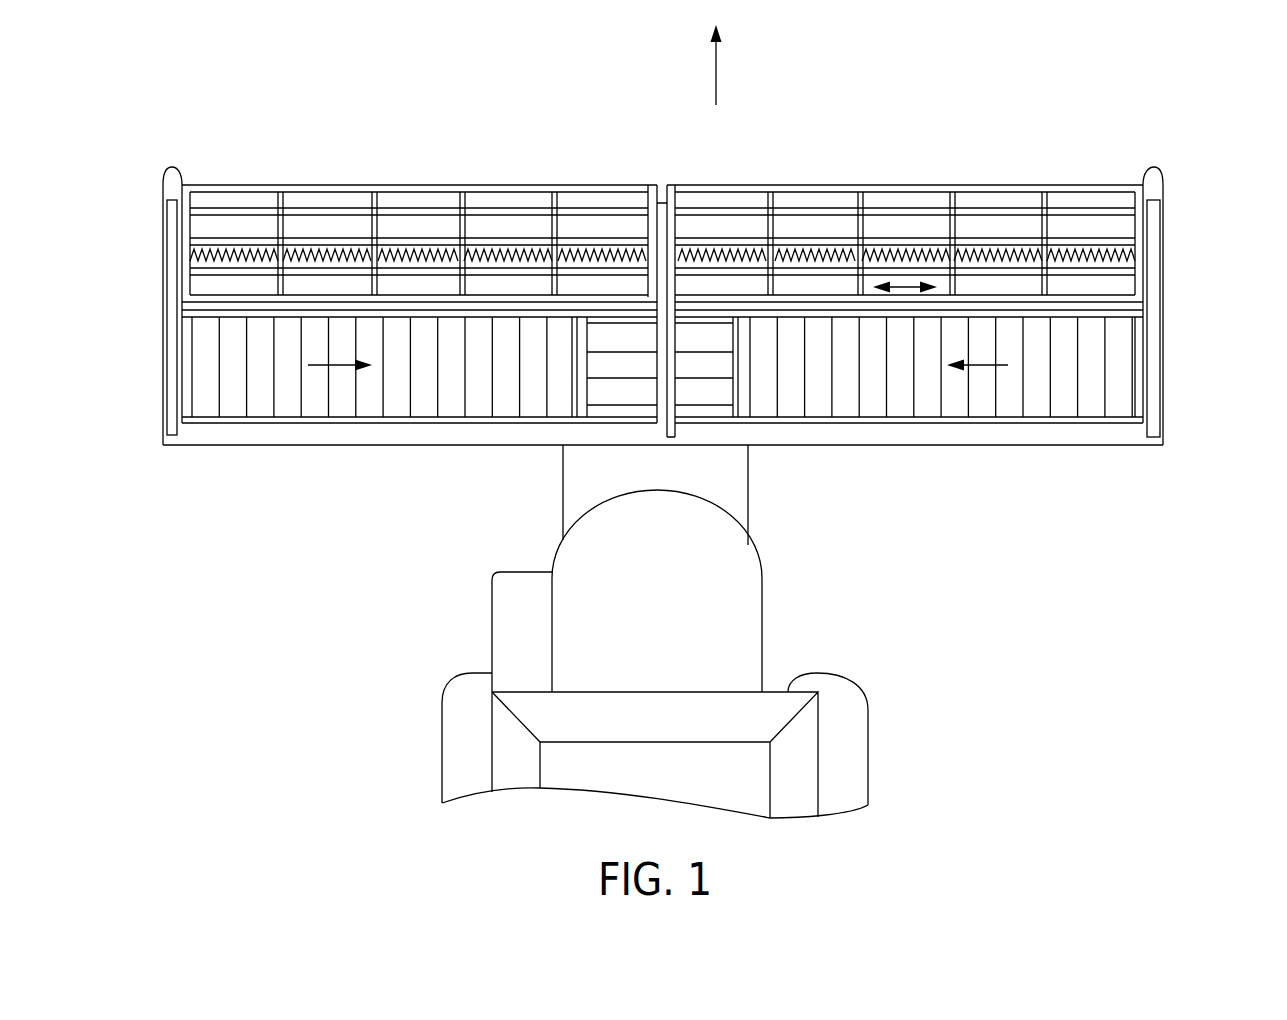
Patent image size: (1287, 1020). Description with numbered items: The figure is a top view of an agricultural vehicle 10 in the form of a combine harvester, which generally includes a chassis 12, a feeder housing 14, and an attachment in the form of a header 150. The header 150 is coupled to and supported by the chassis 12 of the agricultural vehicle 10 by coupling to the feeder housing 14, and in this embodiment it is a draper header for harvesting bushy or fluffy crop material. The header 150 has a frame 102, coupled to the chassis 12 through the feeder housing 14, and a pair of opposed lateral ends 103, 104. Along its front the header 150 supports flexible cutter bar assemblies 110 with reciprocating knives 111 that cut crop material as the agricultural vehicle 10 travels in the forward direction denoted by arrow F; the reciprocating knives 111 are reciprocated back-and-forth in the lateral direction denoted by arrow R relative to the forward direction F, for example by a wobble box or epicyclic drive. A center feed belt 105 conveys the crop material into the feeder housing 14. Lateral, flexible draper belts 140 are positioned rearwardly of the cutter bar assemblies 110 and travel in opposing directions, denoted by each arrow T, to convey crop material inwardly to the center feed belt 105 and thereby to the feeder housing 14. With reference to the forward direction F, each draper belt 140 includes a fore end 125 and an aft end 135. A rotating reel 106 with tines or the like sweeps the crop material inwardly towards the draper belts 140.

The agricultural vehicle 10 is at (820, 762).
The chassis 12 is at (763, 610).
The feeder housing 14 is at (748, 480).
The frame 102 is at (452, 447).
The lateral end 103 is at (128, 364).
The lateral end 104 is at (1200, 364).
The center feed belt 105 is at (625, 336).
The rotating reel 106 is at (993, 185).
The flexible cutter bar assembly 110 is at (325, 228).
The reciprocating knives 111 is at (407, 252).
The fore end 125 is at (1090, 312).
The aft end 135 is at (395, 424).
The draper belt 140 is at (210, 400).
The header 150 is at (1200, 458).
The direction of travel of draper belt T is at (333, 368).
The lateral direction R is at (904, 284).
The forward direction F is at (716, 80).